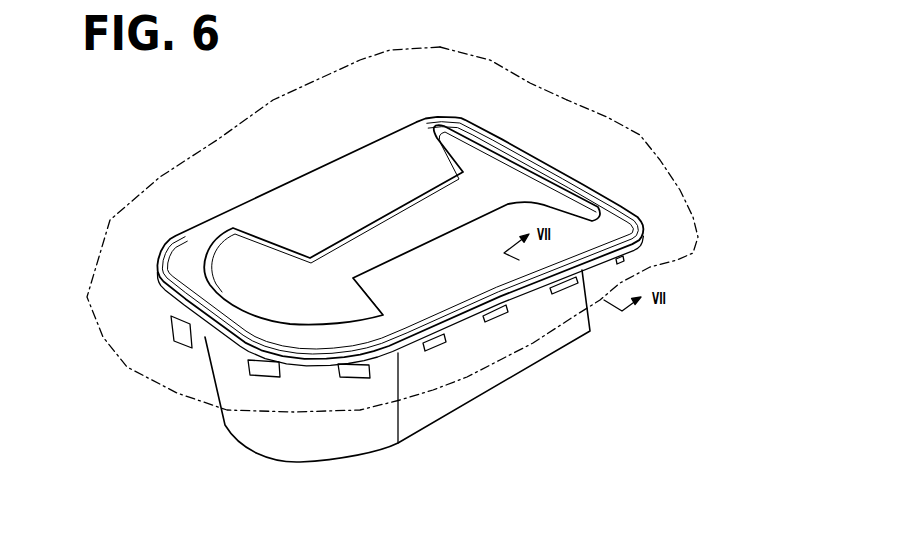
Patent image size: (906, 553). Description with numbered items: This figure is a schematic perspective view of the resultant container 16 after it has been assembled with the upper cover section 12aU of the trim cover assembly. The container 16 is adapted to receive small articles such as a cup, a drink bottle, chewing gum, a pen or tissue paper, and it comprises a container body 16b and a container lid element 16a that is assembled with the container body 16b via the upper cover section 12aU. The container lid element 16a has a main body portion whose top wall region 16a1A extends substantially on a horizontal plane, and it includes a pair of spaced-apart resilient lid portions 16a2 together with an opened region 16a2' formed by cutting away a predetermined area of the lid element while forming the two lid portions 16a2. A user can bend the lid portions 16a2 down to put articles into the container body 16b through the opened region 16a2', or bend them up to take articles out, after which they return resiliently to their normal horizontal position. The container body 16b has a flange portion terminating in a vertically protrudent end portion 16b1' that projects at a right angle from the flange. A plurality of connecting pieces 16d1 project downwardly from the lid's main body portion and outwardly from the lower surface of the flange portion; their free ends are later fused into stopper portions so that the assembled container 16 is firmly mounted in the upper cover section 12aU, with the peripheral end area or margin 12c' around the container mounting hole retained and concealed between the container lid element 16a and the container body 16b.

The upper cover section 12aU is at (567, 97).
The peripheral end area or margin 12c' is at (510, 54).
The container 16 is at (744, 197).
The container lid element 16a is at (634, 201).
The resilient lid portions 16a2 is at (433, 217).
The opened region 16a2' is at (402, 189).
The top wall region 16a1A is at (228, 311).
The container body 16b is at (603, 277).
The vertically protrudent end portion 16b1' is at (133, 353).
The connecting pieces 16d1 is at (357, 378).